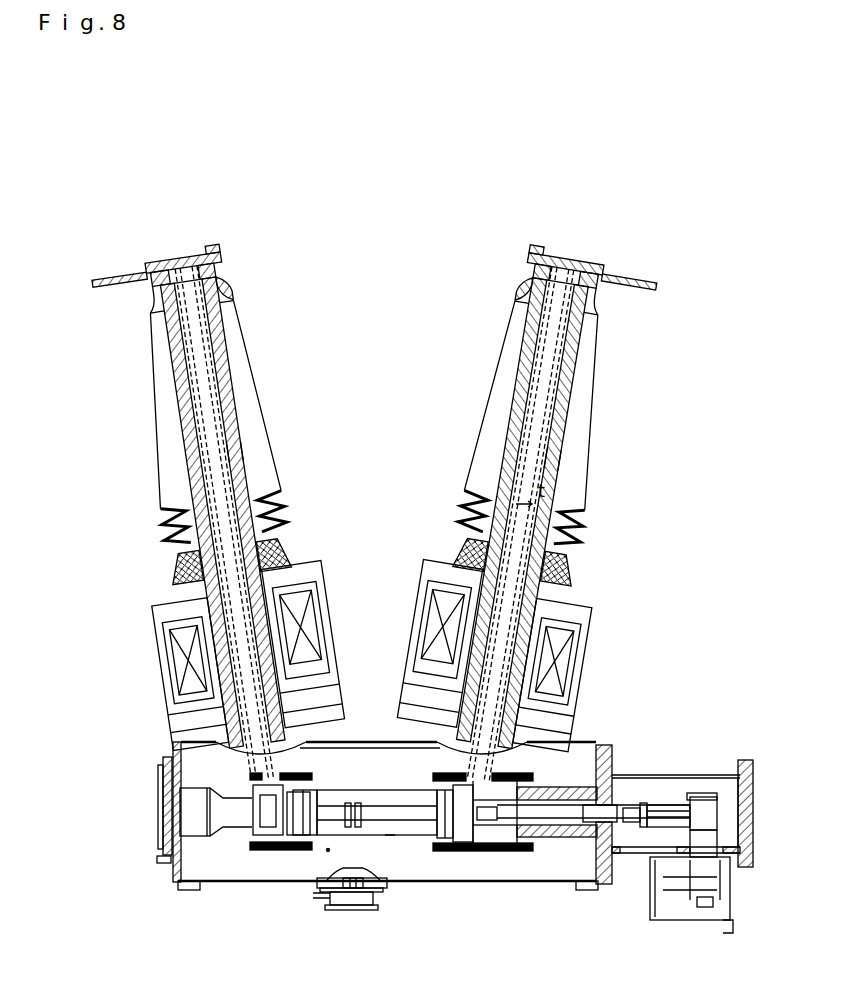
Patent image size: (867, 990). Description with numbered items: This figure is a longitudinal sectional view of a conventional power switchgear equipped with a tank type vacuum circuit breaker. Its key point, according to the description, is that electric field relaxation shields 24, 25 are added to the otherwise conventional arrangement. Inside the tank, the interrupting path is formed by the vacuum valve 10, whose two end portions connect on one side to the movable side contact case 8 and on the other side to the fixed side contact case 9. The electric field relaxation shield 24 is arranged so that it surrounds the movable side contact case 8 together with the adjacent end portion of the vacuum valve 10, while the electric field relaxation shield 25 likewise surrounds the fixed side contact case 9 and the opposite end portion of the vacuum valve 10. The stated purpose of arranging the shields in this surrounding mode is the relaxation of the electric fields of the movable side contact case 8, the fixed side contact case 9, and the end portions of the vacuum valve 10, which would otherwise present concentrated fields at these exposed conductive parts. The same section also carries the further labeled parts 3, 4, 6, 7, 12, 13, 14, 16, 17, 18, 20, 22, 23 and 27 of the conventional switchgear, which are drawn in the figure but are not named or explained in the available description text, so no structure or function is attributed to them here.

The interrupter unit 3 is at (300, 918).
The tank bottom plate 4 is at (397, 884).
The insulating operating rod 6 is at (192, 808).
The tank 7 is at (570, 770).
The movable side contact case 8 is at (427, 840).
The fixed side contact case 9 is at (331, 797).
The vacuum valve 10 is at (380, 797).
The bushing insulator 12 is at (243, 338).
The bushing conductor 13 is at (206, 391).
The bushing terminal 14 is at (186, 262).
The bushing insulator 16 is at (597, 373).
The bushing conductor 17 is at (548, 410).
The bushing terminal 18 is at (577, 266).
The insulating rod 20 is at (553, 826).
The current transformer 22 is at (165, 647).
The current transformer 23 is at (572, 643).
The electric field relaxation shield 24 is at (262, 852).
The electric field relaxation shield 25 is at (512, 851).
The sealing portion 27 is at (214, 290).